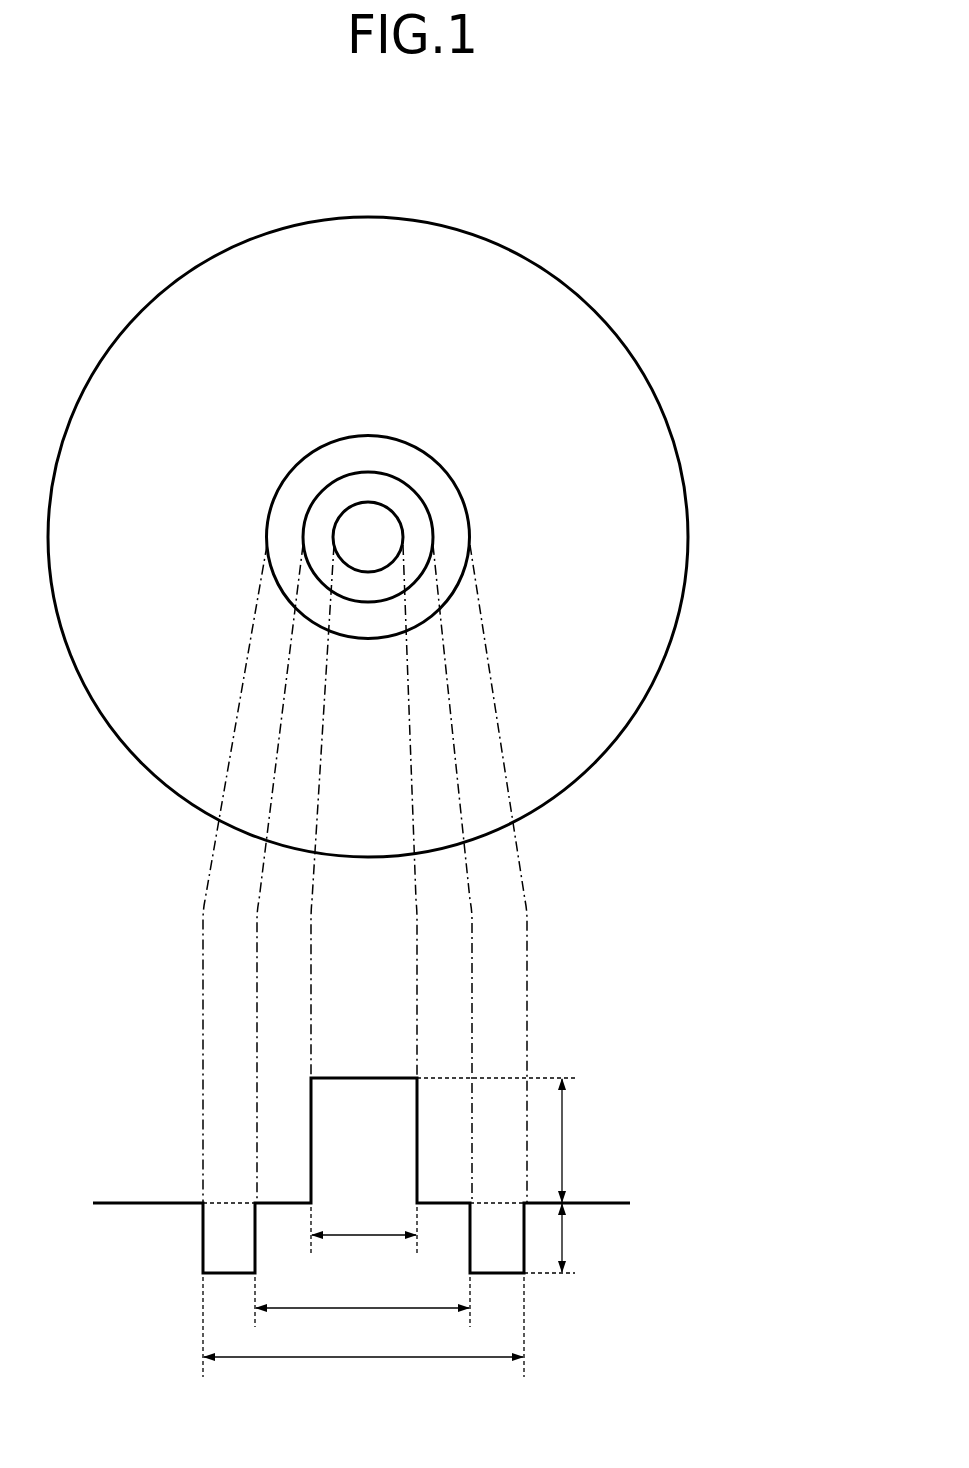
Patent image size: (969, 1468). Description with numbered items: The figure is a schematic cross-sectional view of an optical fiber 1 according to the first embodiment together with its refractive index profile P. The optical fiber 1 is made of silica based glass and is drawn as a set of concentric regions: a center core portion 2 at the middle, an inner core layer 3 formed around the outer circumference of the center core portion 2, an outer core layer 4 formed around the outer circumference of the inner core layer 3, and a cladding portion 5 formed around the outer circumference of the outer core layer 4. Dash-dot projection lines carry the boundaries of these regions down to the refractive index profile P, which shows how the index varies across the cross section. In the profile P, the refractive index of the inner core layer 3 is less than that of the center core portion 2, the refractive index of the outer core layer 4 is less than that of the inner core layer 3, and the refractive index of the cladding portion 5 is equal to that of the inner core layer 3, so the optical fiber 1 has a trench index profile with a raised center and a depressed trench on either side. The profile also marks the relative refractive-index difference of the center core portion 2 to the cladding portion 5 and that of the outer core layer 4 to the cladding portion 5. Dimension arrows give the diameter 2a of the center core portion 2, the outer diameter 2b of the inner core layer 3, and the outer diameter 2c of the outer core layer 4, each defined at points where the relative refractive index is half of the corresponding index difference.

The optical fiber 1 is at (97, 217).
The center core portion 2 is at (368, 537).
The inner core layer 3 is at (402, 503).
The outer core layer 4 is at (447, 528).
The cladding portion 5 is at (625, 513).
The refractive index profile P is at (648, 1022).
The diameter of the center core portion 2a is at (364, 1230).
The outer diameter of the inner core layer 2b is at (362, 1302).
The outer diameter of the outer core layer 2c is at (363, 1327).